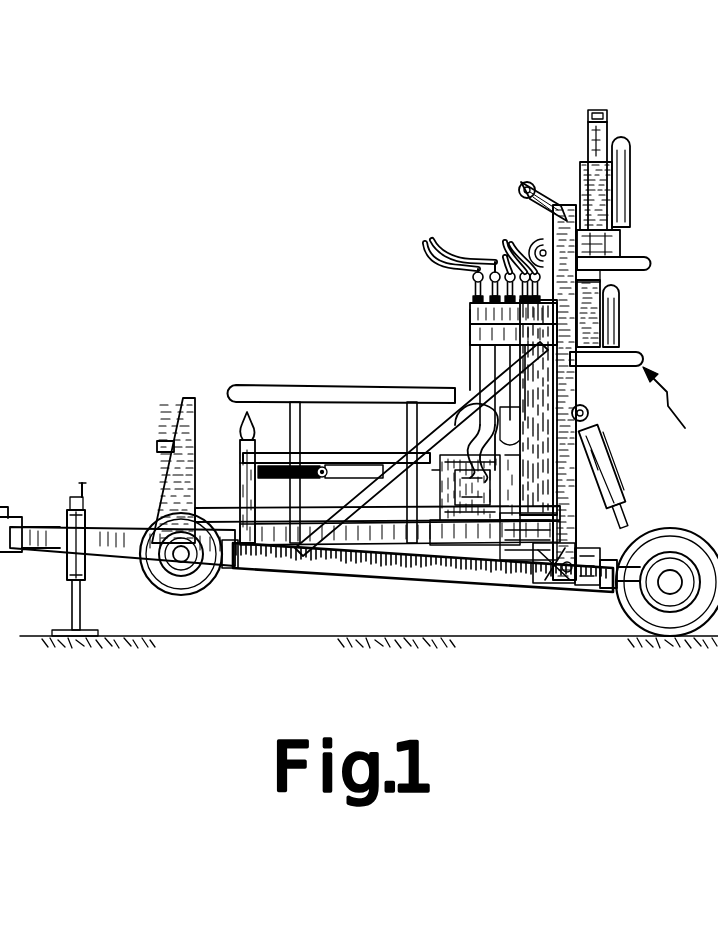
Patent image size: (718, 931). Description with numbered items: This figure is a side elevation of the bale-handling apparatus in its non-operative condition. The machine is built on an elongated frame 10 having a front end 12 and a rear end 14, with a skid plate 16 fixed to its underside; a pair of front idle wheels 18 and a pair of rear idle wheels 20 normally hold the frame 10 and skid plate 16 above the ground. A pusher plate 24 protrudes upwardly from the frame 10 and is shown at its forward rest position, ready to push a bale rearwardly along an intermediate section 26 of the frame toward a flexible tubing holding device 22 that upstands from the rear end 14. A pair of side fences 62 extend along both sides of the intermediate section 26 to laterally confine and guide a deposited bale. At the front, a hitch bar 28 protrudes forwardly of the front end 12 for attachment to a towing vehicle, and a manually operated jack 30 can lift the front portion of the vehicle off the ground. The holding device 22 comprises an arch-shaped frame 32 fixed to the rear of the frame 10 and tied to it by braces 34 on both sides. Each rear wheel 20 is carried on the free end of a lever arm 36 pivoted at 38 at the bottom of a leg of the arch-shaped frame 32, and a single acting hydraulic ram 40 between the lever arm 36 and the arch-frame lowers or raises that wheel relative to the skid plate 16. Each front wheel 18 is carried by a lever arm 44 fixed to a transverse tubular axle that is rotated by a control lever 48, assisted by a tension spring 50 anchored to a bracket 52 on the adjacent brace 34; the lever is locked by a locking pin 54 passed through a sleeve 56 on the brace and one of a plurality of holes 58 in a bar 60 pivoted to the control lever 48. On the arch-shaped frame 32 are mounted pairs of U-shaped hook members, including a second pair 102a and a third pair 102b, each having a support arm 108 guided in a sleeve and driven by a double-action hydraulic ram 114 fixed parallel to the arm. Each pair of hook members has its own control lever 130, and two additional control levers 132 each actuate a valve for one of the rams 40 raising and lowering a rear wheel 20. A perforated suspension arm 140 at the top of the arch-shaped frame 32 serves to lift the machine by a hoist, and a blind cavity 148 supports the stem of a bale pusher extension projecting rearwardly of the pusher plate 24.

The frame 10 is at (462, 584).
The front end 12 is at (253, 560).
The rear end 14 is at (548, 585).
The skid plate 16 is at (420, 580).
The front idle wheels 18 is at (157, 572).
The rear idle wheels 20 is at (680, 537).
The flexible tubing holding device 22 is at (676, 410).
The pusher plate 24 is at (178, 418).
The intermediate section 26 is at (370, 557).
The hitch bar 28 is at (113, 528).
The jack 30 is at (90, 558).
The arch-shaped frame 32 is at (562, 232).
The braces 34 is at (441, 393).
The lever arm 36 is at (600, 587).
The pivot 38 is at (582, 585).
The single acting hydraulic ram 40 is at (612, 452).
The lever arm 44 is at (233, 567).
The control lever 48 is at (237, 463).
The tension spring 50 is at (288, 386).
The bracket 52 is at (311, 453).
The locking pin 54 is at (400, 395).
The sleeve 56 is at (387, 443).
The holes 58 is at (337, 466).
The bar 60 is at (241, 434).
The side fences 62 is at (270, 448).
The second pair of hook members 102a is at (630, 352).
The third pair of hook members 102b is at (623, 257).
The support arm 108 is at (588, 133).
The double-action hydraulic ram 114 is at (630, 153).
The control lever 130 is at (453, 243).
The control levers 132 is at (506, 243).
The perforated suspension arm 140 is at (522, 183).
The blind cavity 148 is at (162, 450).